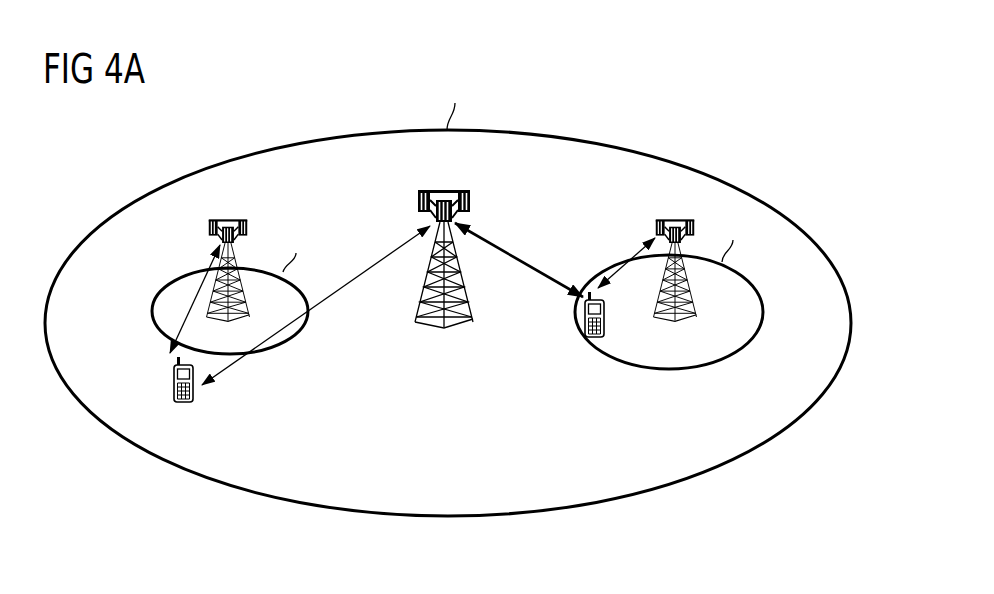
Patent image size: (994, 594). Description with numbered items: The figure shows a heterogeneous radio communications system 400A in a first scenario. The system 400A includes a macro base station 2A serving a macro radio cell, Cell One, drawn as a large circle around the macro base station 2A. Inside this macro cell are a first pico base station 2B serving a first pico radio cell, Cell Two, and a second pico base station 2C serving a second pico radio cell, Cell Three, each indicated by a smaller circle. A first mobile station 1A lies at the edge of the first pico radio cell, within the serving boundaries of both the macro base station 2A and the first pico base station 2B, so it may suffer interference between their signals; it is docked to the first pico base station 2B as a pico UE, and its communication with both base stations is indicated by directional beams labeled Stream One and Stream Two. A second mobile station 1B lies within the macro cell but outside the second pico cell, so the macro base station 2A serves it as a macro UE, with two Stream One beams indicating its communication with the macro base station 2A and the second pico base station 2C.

The heterogeneous radio communications system 400A is at (762, 121).
The macro base station 2A is at (445, 188).
The first pico base station 2B is at (675, 220).
The second pico base station 2C is at (237, 220).
The first mobile station 1A is at (597, 337).
The second mobile station 1B is at (172, 385).